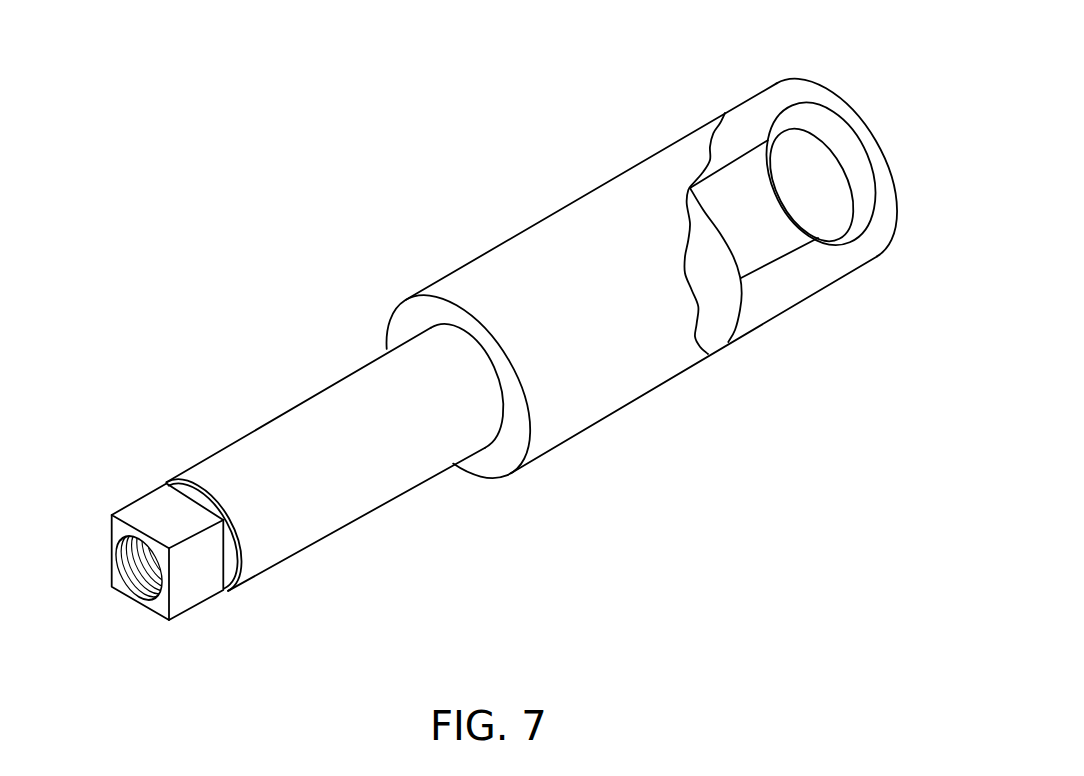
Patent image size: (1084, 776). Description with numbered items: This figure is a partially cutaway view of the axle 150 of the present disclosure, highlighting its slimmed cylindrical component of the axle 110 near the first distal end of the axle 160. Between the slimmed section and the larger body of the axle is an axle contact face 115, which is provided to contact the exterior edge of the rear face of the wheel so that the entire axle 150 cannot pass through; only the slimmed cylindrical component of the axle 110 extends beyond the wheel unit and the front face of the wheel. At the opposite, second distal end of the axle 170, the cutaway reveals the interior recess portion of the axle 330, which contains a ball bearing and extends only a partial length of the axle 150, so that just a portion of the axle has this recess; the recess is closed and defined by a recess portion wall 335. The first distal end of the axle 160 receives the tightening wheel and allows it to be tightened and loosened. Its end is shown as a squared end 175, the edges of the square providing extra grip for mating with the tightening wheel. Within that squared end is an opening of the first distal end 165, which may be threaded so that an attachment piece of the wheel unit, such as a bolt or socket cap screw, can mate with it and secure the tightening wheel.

The slimmed cylindrical component of the axle 110 is at (330, 410).
The axle contact face 115 is at (490, 463).
The axle 150 is at (450, 207).
The first distal end of the axle 160 is at (125, 527).
The opening of the first distal end 165 is at (150, 585).
The second distal end of the axle 170 is at (840, 100).
The squared end 175 is at (148, 508).
The interior recess portion of the axle 330 is at (808, 185).
The recess portion wall 335 is at (720, 330).